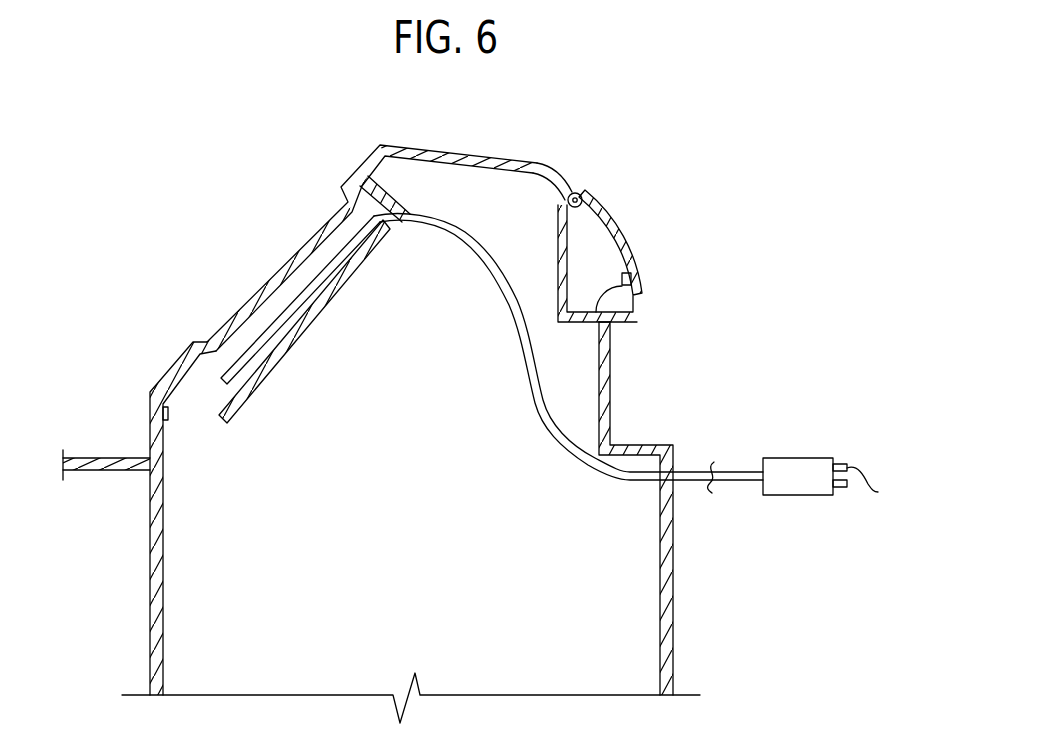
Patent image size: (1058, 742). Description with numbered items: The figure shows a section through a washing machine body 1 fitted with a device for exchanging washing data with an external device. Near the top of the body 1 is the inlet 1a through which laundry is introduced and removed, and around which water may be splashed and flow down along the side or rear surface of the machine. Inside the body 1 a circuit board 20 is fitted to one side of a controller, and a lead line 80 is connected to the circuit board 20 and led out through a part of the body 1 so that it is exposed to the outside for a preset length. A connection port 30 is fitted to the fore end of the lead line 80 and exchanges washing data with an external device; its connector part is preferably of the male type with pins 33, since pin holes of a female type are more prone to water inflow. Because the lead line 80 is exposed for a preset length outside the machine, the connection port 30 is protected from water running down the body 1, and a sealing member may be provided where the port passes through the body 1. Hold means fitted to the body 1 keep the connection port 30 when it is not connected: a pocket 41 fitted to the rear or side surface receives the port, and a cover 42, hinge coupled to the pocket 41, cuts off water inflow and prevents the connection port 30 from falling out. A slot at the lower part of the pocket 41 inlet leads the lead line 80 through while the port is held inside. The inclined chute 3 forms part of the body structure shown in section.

The body 1 is at (612, 385).
The inlet 1a is at (110, 470).
The inclined chute 3 is at (292, 262).
The circuit board 20 is at (257, 335).
The lead line 80 is at (486, 258).
The cover 42 is at (620, 232).
The pocket 41 is at (640, 278).
The connection port 30 is at (798, 498).
The pins 33 is at (873, 489).